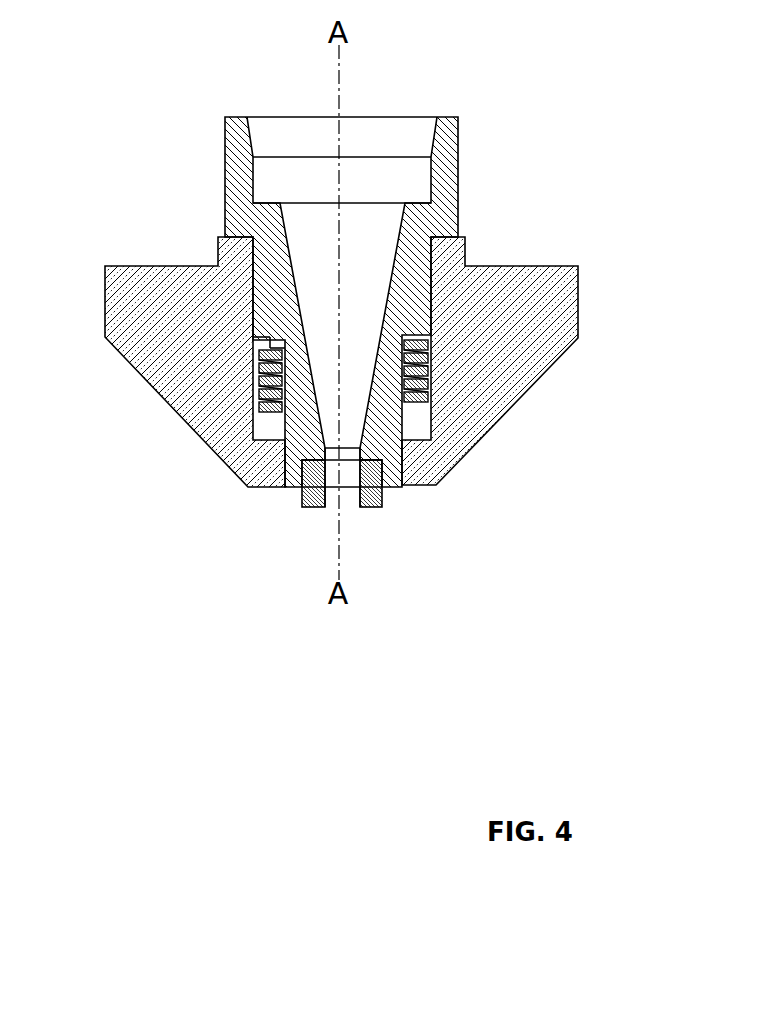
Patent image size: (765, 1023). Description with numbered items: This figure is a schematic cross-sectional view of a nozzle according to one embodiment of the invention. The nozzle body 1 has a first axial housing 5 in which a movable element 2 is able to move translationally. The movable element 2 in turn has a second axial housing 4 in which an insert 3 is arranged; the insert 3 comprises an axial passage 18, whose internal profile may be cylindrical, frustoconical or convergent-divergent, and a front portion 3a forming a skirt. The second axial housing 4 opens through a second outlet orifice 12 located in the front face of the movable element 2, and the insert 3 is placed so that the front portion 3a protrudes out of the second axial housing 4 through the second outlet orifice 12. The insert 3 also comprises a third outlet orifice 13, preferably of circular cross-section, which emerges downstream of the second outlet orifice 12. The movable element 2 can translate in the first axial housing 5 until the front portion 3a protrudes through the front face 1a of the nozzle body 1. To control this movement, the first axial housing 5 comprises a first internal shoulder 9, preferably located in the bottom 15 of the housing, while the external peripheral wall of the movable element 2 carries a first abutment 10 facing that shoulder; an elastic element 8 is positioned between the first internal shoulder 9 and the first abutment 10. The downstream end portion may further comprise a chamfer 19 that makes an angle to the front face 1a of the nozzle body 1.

The nozzle body 1 is at (537, 295).
The front face of the nozzle body 1a is at (260, 487).
The movable element 2 is at (270, 248).
The insert 3 is at (307, 472).
The front portion forming a skirt 3a is at (371, 500).
The second axial housing 4 is at (380, 294).
The first axial housing 5 is at (380, 197).
The elastic element 8 is at (257, 370).
The first internal shoulder 9 is at (430, 423).
The first abutment 10 is at (420, 327).
The second outlet orifice 12 is at (378, 488).
The third outlet orifice 13 is at (355, 505).
The bottom of the first housing 15 is at (413, 458).
The axial passage 18 is at (298, 507).
The chamfer 19 is at (298, 495).